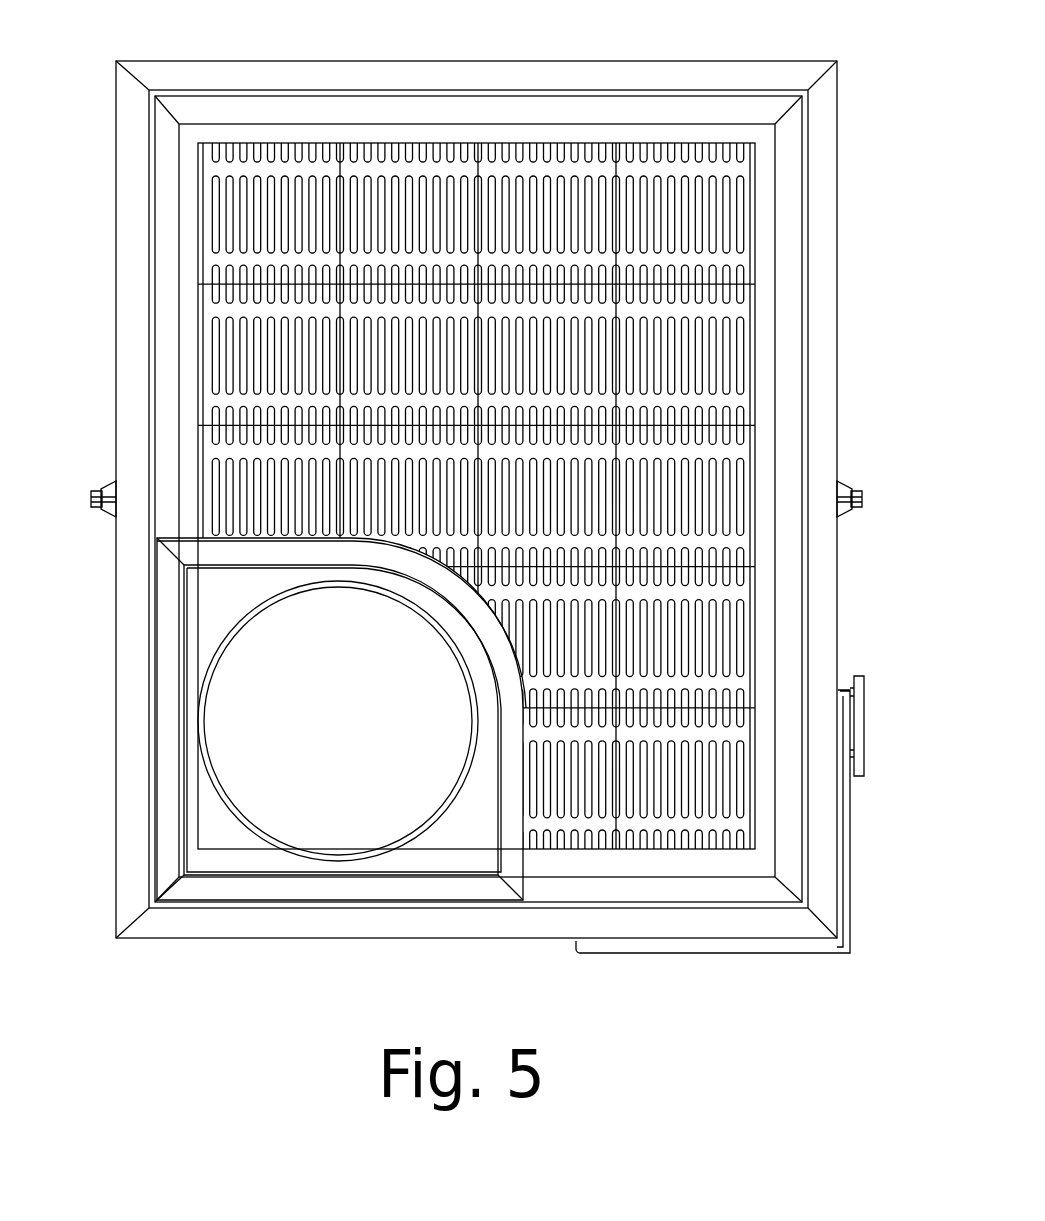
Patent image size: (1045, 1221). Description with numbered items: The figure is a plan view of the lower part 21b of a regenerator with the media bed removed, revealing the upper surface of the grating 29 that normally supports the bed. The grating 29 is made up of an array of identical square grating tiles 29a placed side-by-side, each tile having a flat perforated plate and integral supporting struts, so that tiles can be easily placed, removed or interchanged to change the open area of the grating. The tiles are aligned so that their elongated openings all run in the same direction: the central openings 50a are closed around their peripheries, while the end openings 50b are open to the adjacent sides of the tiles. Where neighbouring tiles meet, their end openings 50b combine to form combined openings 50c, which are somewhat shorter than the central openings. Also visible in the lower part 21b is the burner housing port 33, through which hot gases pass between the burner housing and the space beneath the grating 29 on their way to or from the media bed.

The lower part 21b is at (826, 260).
The grating 29 is at (476, 438).
The grating tile 29a is at (232, 312).
The burner housing port 33 is at (230, 800).
The central openings 50a is at (727, 493).
The end openings 50b is at (738, 558).
The combined openings 50c is at (740, 692).